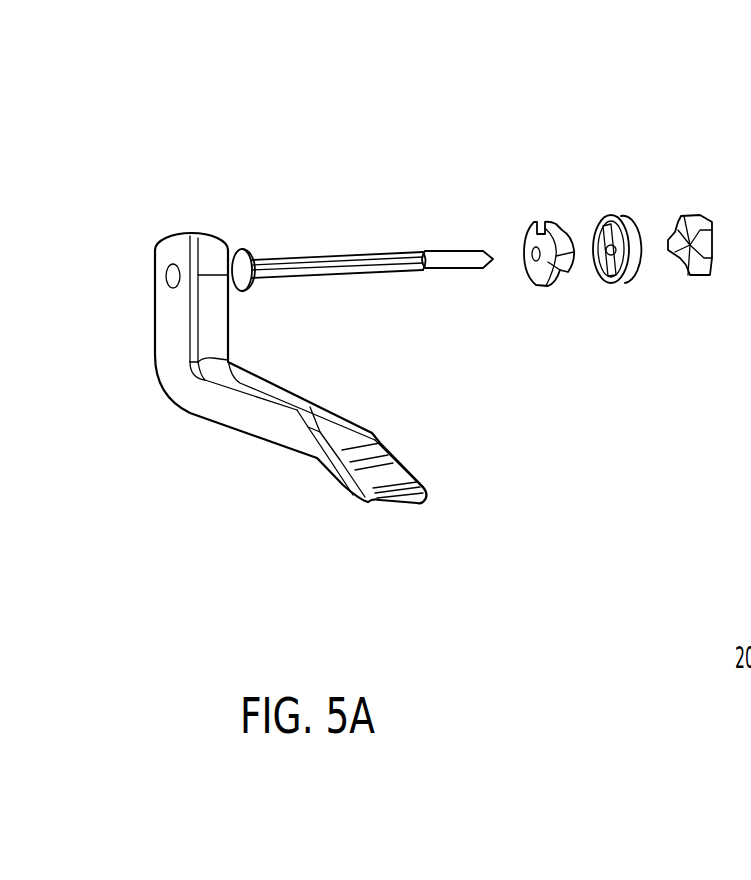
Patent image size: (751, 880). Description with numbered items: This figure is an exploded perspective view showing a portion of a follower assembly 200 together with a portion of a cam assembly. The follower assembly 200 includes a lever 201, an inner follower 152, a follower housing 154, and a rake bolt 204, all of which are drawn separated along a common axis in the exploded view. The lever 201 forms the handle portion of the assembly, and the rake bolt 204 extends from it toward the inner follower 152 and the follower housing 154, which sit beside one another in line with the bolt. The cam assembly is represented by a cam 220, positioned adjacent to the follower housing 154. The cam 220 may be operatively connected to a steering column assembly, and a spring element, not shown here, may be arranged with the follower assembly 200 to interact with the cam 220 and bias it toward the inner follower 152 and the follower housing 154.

The follower assembly 200 is at (675, 146).
The lever 201 is at (397, 503).
The rake bolt 204 is at (333, 258).
The inner follower 152 is at (540, 232).
The follower housing 154 is at (618, 223).
The cam 220 is at (690, 218).